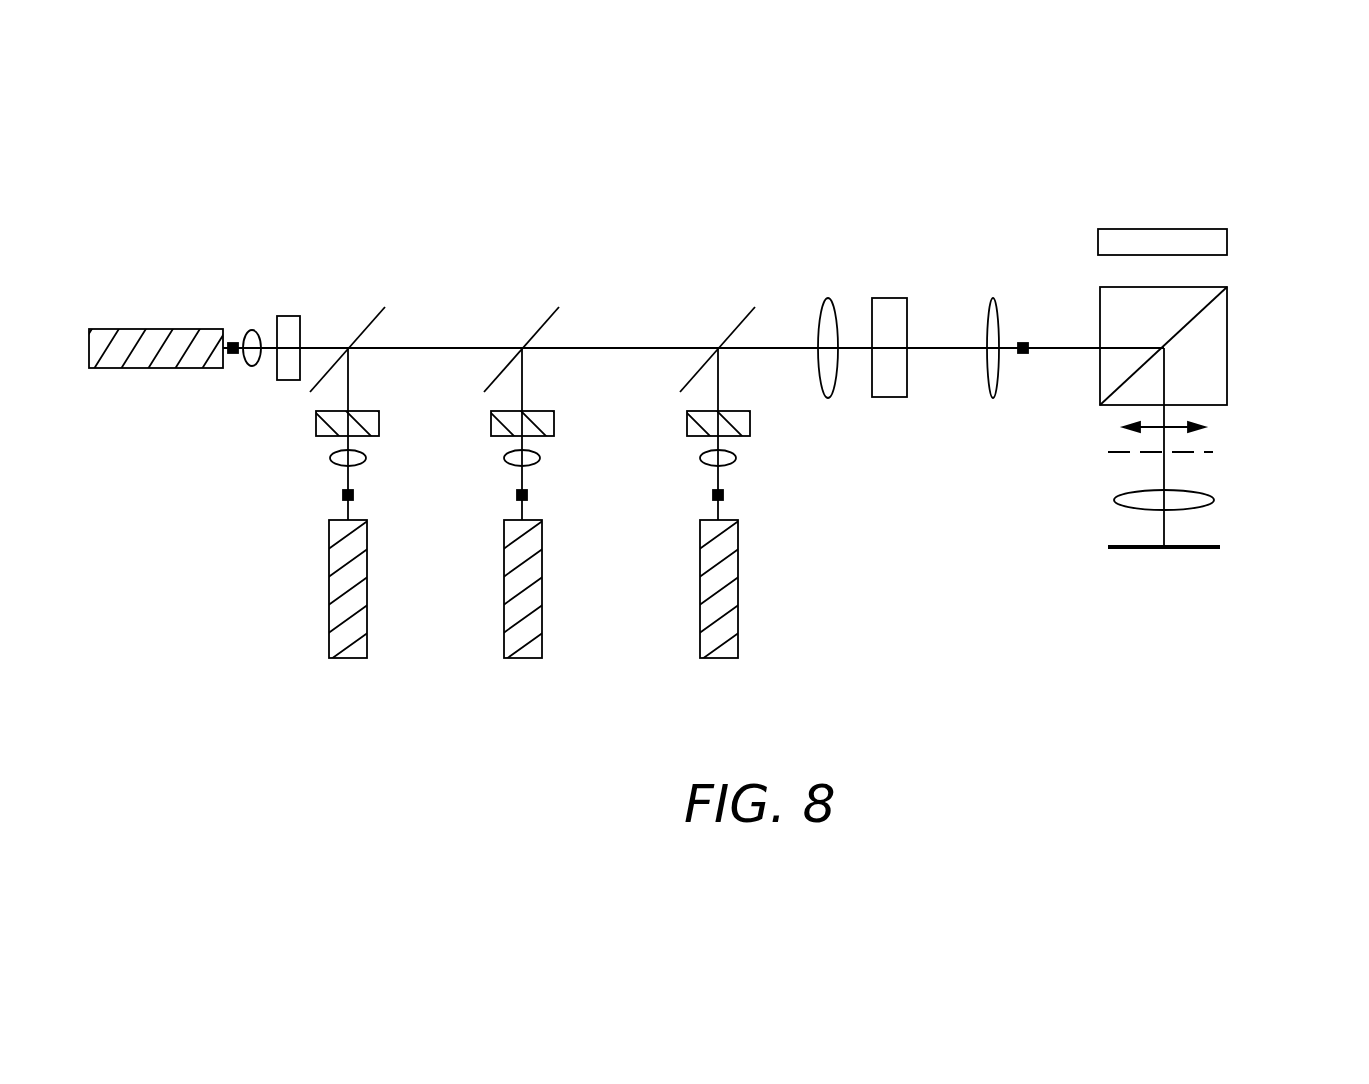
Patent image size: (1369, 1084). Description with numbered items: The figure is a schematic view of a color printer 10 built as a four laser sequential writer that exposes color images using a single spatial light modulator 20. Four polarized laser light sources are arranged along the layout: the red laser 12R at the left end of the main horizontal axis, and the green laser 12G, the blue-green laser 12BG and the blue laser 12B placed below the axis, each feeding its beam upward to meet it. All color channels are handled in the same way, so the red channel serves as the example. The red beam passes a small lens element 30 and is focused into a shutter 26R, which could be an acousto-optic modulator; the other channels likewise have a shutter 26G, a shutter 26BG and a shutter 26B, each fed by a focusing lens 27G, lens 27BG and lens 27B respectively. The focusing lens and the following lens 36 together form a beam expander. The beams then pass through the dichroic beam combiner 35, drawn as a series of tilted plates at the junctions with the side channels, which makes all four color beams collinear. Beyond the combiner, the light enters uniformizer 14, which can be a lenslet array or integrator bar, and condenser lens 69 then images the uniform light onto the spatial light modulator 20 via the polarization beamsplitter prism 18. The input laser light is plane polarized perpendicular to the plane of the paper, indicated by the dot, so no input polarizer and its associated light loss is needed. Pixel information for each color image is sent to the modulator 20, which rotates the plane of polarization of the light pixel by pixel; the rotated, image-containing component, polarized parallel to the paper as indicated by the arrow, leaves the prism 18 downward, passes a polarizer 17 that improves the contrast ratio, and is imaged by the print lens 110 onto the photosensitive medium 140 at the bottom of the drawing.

The color printer 10 is at (1055, 173).
The red laser 12R is at (160, 328).
The green laser 12G is at (338, 640).
The blue-green laser 12BG is at (513, 640).
The blue laser 12B is at (710, 640).
The uniformizer 14 is at (887, 298).
The polarizer 17 is at (1213, 452).
The polarization beamsplitter prism 18 is at (1227, 345).
The spatial light modulator 20 is at (1168, 229).
The shutter 26R is at (289, 316).
The shutter 26G is at (316, 425).
The shutter 26BG is at (553, 422).
The shutter 26B is at (750, 422).
The lens 27G is at (366, 458).
The lens 27BG is at (540, 458).
The lens 27B is at (737, 458).
The red collimating lens 30 is at (255, 365).
The dichroic beam combiner 35 is at (755, 280).
The lens 36 is at (827, 300).
The condenser lens 69 is at (994, 300).
The print lens 110 is at (1214, 500).
The photosensitive medium 140 is at (1220, 547).